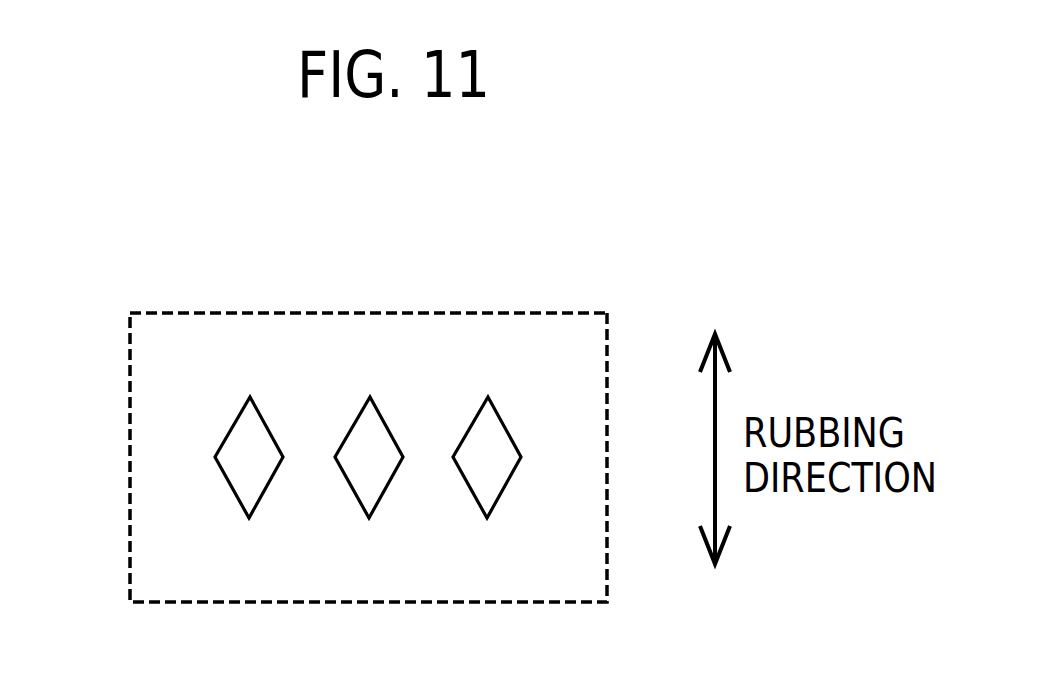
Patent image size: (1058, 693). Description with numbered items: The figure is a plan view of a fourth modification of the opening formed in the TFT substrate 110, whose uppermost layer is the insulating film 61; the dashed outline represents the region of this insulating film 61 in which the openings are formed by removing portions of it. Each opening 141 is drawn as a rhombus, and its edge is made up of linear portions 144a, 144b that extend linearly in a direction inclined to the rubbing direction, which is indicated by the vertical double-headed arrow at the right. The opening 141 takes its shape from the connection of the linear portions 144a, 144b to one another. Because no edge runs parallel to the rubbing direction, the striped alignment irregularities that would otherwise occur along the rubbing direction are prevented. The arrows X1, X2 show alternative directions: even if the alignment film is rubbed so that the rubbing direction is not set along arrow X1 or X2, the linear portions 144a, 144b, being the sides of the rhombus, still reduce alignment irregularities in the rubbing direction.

The insulating film 61 is at (553, 327).
The TFT substrate 110 is at (608, 588).
The linear portion 144a is at (243, 413).
The linear portion 144b is at (378, 412).
The opening 141 is at (353, 505).
The arrow X1 is at (248, 458).
The arrow X2 is at (372, 458).